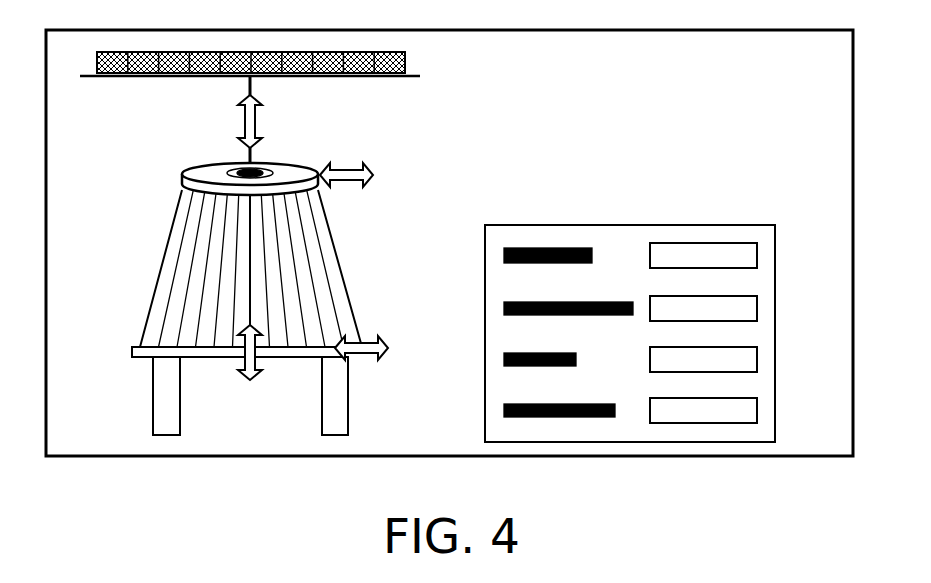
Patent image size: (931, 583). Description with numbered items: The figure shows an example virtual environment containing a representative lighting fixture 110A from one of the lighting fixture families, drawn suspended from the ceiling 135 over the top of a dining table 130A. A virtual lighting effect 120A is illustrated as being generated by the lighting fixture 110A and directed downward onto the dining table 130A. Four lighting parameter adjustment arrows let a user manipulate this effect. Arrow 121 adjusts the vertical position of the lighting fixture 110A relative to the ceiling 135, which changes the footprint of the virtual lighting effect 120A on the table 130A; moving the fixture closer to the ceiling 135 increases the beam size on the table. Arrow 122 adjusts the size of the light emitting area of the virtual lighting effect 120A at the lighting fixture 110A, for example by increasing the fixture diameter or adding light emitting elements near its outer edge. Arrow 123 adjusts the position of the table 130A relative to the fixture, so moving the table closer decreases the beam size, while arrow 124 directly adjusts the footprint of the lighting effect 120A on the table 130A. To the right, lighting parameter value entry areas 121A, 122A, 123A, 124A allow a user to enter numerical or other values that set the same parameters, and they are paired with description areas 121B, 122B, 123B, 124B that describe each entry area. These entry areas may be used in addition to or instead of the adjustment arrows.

The ceiling 135 is at (180, 78).
The lighting parameter adjustment arrow 121 is at (256, 125).
The lighting parameter adjustment arrow 122 is at (372, 161).
The lighting parameter adjustment arrow 123 is at (250, 383).
The lighting parameter adjustment arrow 124 is at (372, 337).
The representative lighting fixture 110A is at (200, 176).
The virtual lighting effect 120A is at (190, 231).
The dining table 130A is at (170, 352).
The lighting parameter value entry area 121A is at (757, 257).
The lighting parameter value entry area 122A is at (757, 310).
The lighting parameter value entry area 123A is at (757, 361).
The lighting parameter value entry area 124A is at (757, 412).
The description area 121B is at (504, 255).
The description area 122B is at (504, 308).
The description area 123B is at (504, 359).
The description area 124B is at (504, 410).